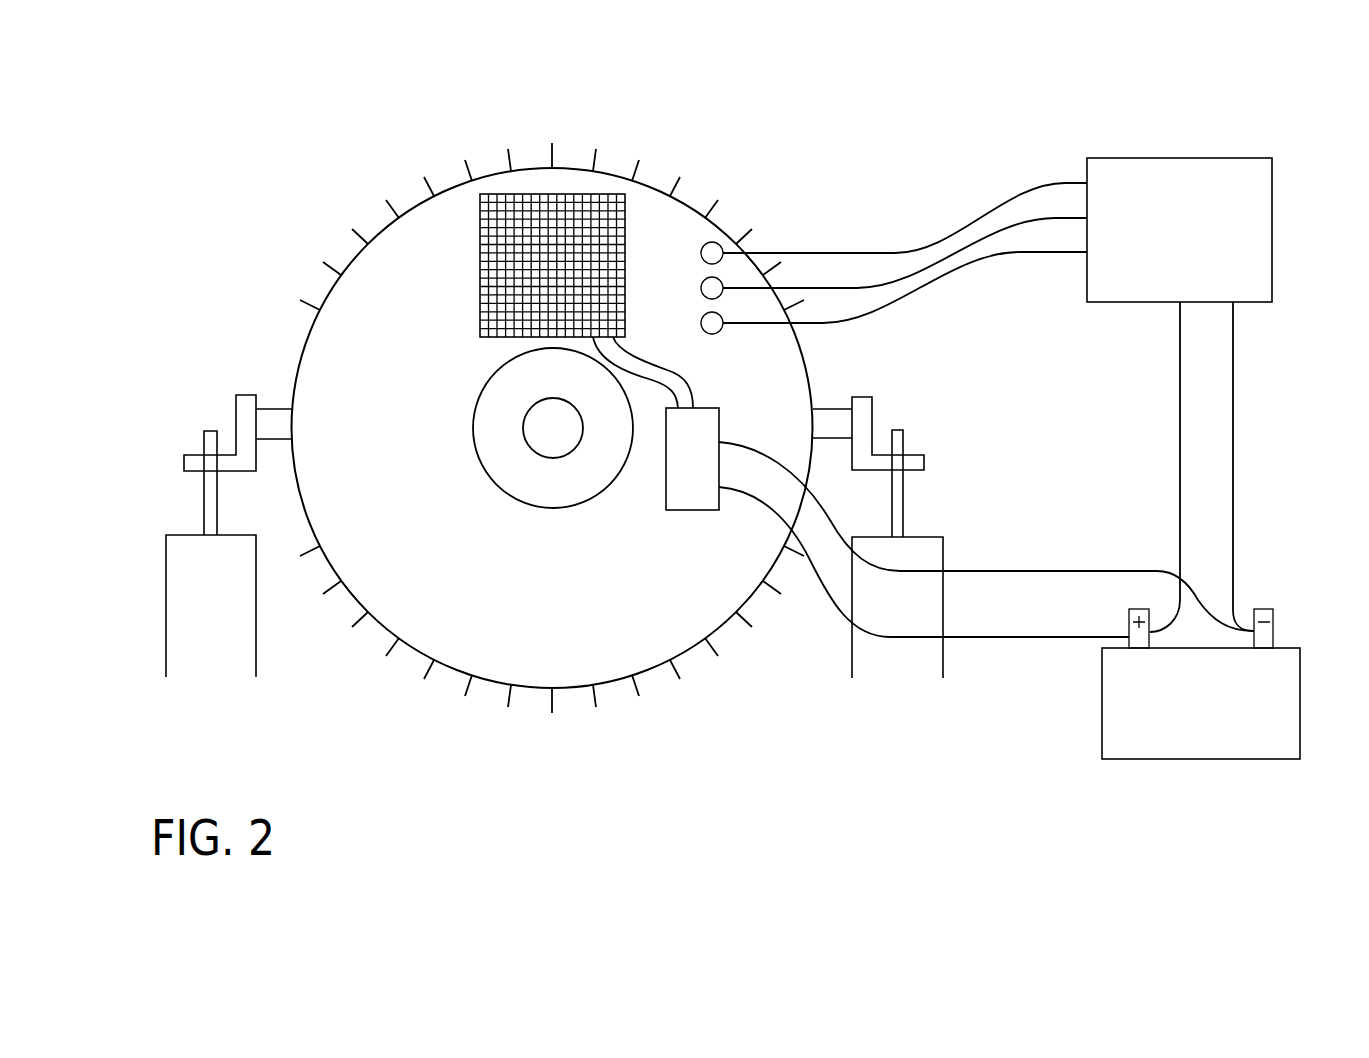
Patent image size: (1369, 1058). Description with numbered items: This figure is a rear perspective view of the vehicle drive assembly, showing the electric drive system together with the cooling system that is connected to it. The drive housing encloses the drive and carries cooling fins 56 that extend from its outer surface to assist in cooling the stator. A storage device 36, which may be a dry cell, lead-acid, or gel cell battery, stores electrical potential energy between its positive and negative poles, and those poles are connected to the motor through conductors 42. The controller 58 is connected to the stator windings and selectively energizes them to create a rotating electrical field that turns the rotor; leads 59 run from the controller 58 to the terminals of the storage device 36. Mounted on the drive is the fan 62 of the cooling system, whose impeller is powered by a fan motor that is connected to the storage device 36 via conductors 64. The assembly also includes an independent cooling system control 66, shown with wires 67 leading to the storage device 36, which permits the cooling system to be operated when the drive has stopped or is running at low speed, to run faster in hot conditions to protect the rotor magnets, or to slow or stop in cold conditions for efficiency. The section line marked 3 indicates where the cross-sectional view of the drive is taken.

The section line for FIG. 3 is at (553, 130).
The storage device 36 is at (1216, 759).
The conductors 42 is at (862, 253).
The cooling fins 56 is at (511, 160).
The controller 58 is at (1158, 250).
The power leads 59 is at (1180, 469).
The fan 62 is at (592, 205).
The conductors 64 is at (650, 362).
The independent cooling system control 66 is at (667, 490).
The battery wires 67 is at (1017, 571).